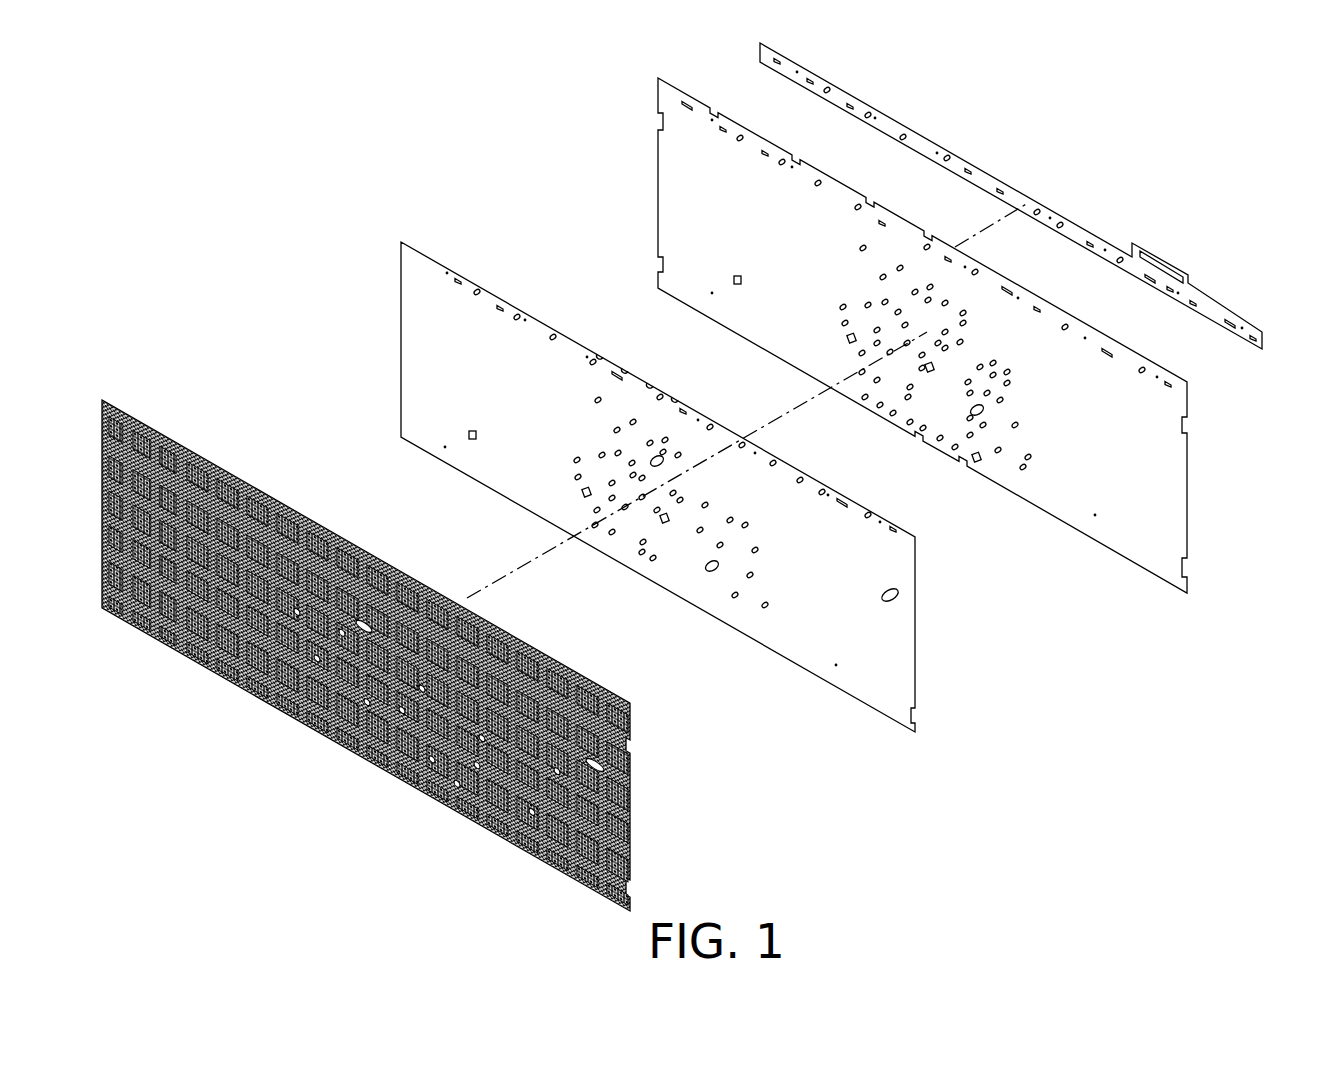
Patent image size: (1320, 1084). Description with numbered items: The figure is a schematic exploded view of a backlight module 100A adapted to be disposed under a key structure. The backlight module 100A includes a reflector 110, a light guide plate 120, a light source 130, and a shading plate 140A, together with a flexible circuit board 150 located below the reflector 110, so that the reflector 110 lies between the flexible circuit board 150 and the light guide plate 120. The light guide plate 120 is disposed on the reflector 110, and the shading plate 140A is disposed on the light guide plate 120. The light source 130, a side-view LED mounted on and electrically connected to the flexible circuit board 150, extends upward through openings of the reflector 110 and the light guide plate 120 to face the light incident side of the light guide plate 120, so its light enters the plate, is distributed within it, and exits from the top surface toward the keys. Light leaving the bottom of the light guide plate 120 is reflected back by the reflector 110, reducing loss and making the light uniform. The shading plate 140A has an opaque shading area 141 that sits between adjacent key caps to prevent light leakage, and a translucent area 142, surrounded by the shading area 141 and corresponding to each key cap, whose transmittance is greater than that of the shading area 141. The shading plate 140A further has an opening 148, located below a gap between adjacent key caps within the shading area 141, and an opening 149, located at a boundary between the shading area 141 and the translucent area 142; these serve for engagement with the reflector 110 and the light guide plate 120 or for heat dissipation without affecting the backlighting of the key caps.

The backlight module 100A is at (1067, 725).
The reflector 110 is at (1190, 493).
The light guide plate 120 is at (915, 642).
The light source 130 is at (1230, 322).
The flexible circuit board 150 is at (1215, 312).
The shading plate 140A is at (633, 818).
The shading area 141 is at (596, 690).
The translucent area 142 is at (614, 784).
The opening 148 is at (363, 625).
The opening 149 is at (402, 710).